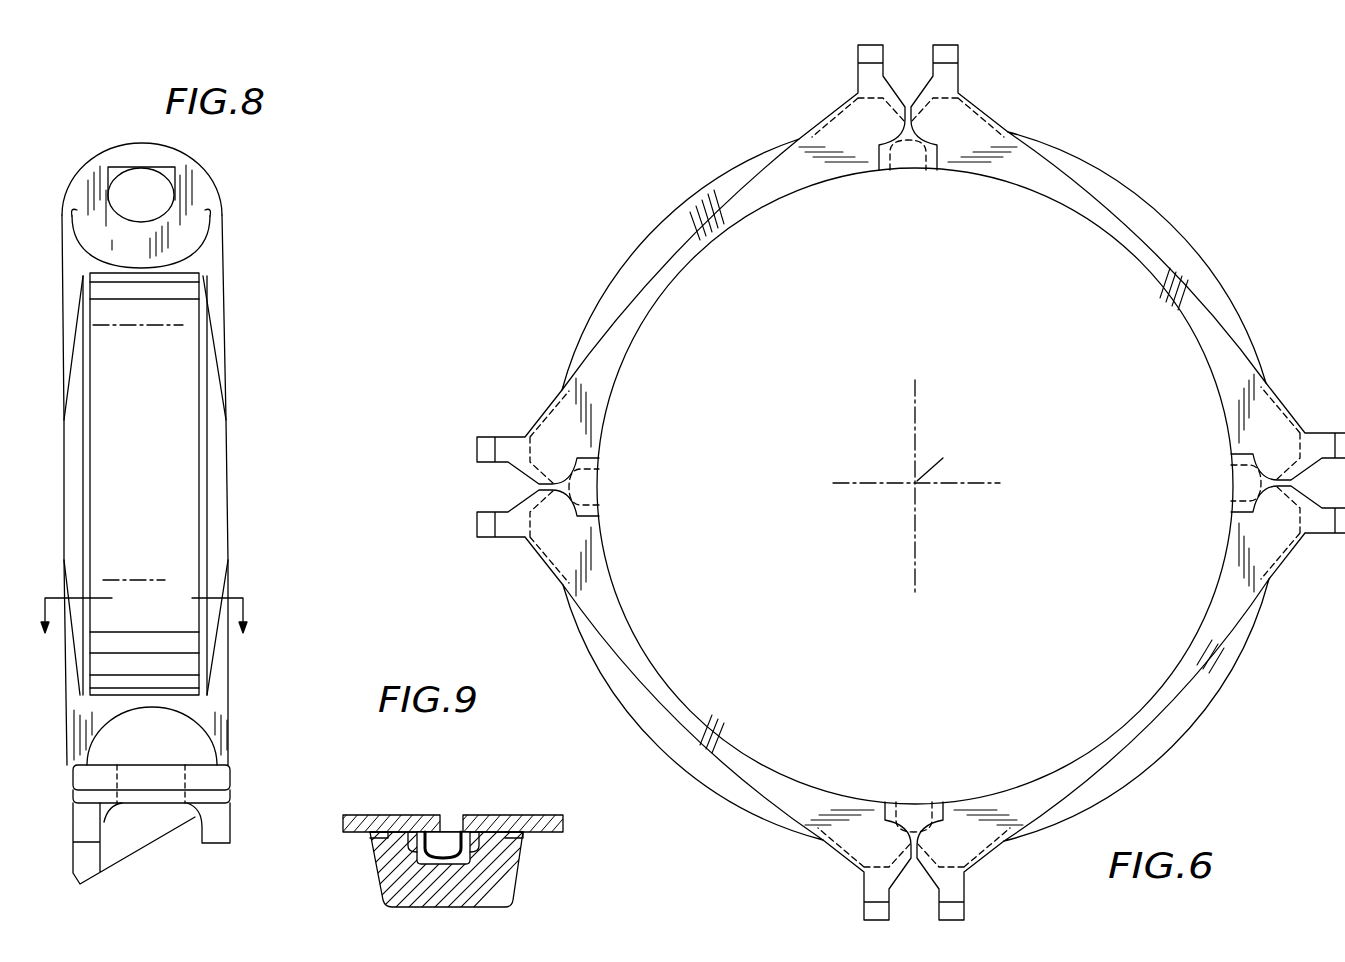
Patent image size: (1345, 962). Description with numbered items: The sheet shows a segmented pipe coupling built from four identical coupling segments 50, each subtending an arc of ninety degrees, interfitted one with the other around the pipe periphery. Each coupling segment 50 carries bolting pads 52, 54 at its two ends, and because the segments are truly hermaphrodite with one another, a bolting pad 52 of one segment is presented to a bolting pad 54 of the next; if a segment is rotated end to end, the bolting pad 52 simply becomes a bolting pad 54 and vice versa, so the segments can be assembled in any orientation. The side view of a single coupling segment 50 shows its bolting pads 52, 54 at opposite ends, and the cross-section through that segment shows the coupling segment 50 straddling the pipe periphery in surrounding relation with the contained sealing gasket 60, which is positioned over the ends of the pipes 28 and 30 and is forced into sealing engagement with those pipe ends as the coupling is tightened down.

In FIG. 9, the pipe 28 is at (352, 832).
In FIG. 9, the pipe 30 is at (553, 833).
In FIG. 8, the coupling segment 50 is at (187, 483).
In FIG. 9, the coupling segment 50 is at (513, 890).
In FIG. 6, the coupling segment 50 is at (661, 245).
In FIG. 8, the bolting pad 52 is at (228, 795).
In FIG. 6, the bolting pad 52 is at (960, 52).
In FIG. 8, the bolting pad 54 is at (213, 193).
In FIG. 6, the bolting pad 54 is at (857, 52).
In FIG. 9, the sealing gasket 60 is at (447, 850).